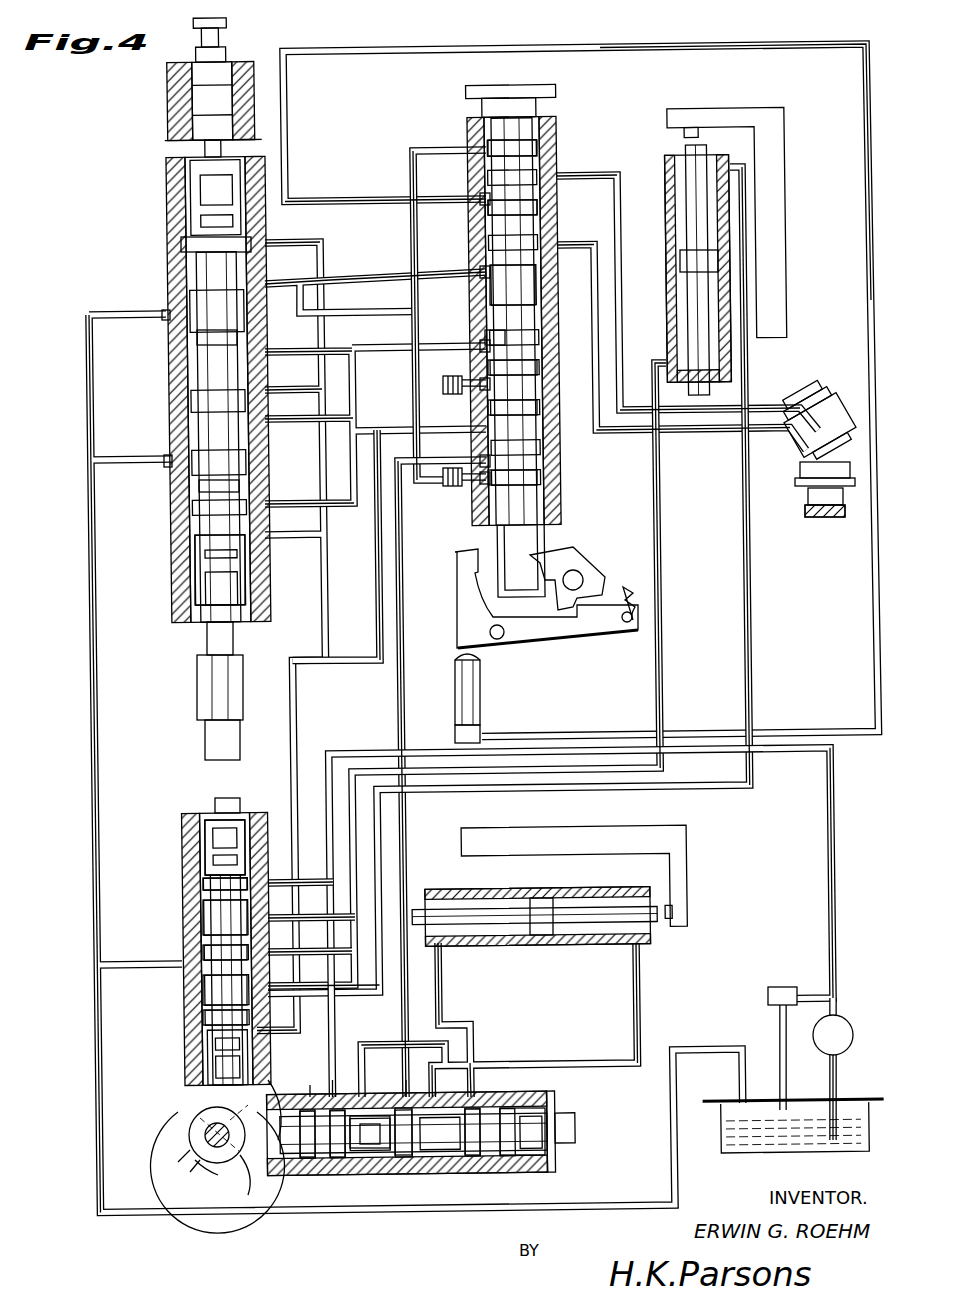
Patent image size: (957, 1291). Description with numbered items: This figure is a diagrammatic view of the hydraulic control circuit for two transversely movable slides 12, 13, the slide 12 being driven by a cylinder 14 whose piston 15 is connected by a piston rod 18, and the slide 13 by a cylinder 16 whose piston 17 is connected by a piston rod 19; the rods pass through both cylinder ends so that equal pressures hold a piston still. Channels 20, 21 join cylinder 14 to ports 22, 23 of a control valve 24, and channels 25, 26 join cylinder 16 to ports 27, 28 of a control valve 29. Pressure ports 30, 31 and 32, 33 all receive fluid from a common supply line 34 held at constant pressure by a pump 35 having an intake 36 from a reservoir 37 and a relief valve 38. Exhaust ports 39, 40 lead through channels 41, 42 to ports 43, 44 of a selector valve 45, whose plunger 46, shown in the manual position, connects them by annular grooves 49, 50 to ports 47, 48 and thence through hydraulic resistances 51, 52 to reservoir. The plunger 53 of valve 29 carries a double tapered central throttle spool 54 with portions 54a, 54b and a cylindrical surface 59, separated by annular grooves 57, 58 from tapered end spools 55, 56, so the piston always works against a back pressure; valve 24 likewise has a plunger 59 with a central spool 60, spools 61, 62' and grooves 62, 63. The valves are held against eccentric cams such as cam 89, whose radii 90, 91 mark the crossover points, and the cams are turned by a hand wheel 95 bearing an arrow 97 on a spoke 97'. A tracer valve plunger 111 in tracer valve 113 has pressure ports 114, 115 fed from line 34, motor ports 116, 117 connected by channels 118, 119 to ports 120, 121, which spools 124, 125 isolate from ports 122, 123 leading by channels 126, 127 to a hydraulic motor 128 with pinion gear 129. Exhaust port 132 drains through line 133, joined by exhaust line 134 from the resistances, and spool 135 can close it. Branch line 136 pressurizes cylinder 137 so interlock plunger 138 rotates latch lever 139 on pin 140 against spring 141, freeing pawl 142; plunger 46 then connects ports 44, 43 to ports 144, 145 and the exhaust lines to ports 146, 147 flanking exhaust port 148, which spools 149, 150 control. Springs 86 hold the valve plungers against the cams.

The slide 12 is at (783, 226).
The slide 13 is at (688, 857).
The cylinder 14 is at (668, 210).
The piston 15 is at (688, 260).
The cylinder 16 is at (516, 946).
The piston 17 is at (542, 935).
The piston rod 18 is at (692, 315).
The piston rod 19 is at (608, 926).
The channel 20 is at (663, 540).
The channel 21 is at (752, 588).
The port 22 is at (282, 915).
The port 23 is at (278, 990).
The control valve 24 is at (184, 1062).
The channel 25 is at (443, 999).
The channel 26 is at (620, 1068).
The port 27 is at (356, 1097).
The port 28 is at (446, 1098).
The control valve 29 is at (550, 1094).
The pressure port 30 is at (282, 880).
The pressure port 31 is at (276, 1028).
The pressure port 32 is at (316, 1097).
The pressure port 33 is at (482, 1097).
The supply line 34 is at (838, 928).
The pump 35 is at (844, 1020).
The intake 36 is at (840, 1066).
The reservoir 37 is at (720, 1145).
The relief valve 38 is at (785, 986).
The exhaust port 39 is at (282, 952).
The exhaust port 40 is at (407, 1097).
The channel 41 is at (379, 580).
The channel 42 is at (405, 607).
The port 43 is at (482, 343).
The port 44 is at (482, 455).
The selector valve 45 is at (542, 150).
The plunger 46 is at (497, 112).
The port 47 is at (482, 396).
The port 48 is at (482, 496).
The annular groove 49 is at (522, 374).
The annular groove 50 is at (512, 470).
The hydraulic resistance 51 is at (447, 394).
The hydraulic resistance 52 is at (448, 487).
The plunger 53 is at (524, 1158).
The double tapered central throttle spool 54 is at (370, 1154).
The throttling spool 54a is at (378, 1158).
The tapered throttle spool 54b is at (426, 1072).
The tapered end throttle spool 55 is at (348, 1174).
The tapered end throttle spool 56 is at (470, 1158).
The annular groove 57 is at (368, 1158).
The annular groove 58 is at (419, 1158).
The plunger 59 is at (214, 866).
The central double tapered throttle spool 60 is at (205, 954).
The tapered throttle spool 61 is at (200, 897).
The annular groove 62 is at (194, 917).
The tapered throttle spool 62' is at (192, 1019).
The annular groove 63 is at (215, 983).
The plunger stem 86 is at (210, 806).
The cam 89 is at (228, 1150).
The radius 90 is at (249, 1182).
The radius 91 is at (190, 1122).
The hand wheel 95 is at (166, 1160).
The arrow 97 is at (165, 1151).
The spoke 97' is at (203, 1202).
The tracer valve plunger 111 is at (200, 166).
The tracer valve 113 is at (181, 244).
The pressure port 114 is at (268, 388).
The pressure port 115 is at (283, 238).
The motor port 116 is at (266, 355).
The motor port 117 is at (286, 285).
The channel 118 is at (392, 274).
The channel 119 is at (389, 202).
The port 120 is at (482, 272).
The port 121 is at (482, 199).
The port 122 is at (559, 246).
The port 123 is at (559, 176).
The spool 124 is at (517, 294).
The spool 125 is at (522, 203).
The channel 126 is at (637, 433).
The channel 127 is at (652, 342).
The hydraulic motor 128 is at (811, 406).
The pinion gear 129 is at (825, 518).
The exhaust port 132 is at (178, 313).
The line 133 is at (88, 394).
The exhaust line 134 is at (412, 300).
The spool 135 is at (200, 337).
The branch line 136 is at (603, 50).
The cylinder 137 is at (460, 732).
The interlock plunger 138 is at (460, 673).
The latch lever 139 is at (575, 640).
The pin 140 is at (497, 639).
The spring 141 is at (636, 600).
The pawl 142 is at (588, 566).
The port 144 is at (546, 416).
The port 145 is at (490, 331).
The port 146 is at (268, 505).
The port 147 is at (268, 419).
The exhaust port 148 is at (176, 458).
The spool 149 is at (204, 486).
The spool 150 is at (200, 550).